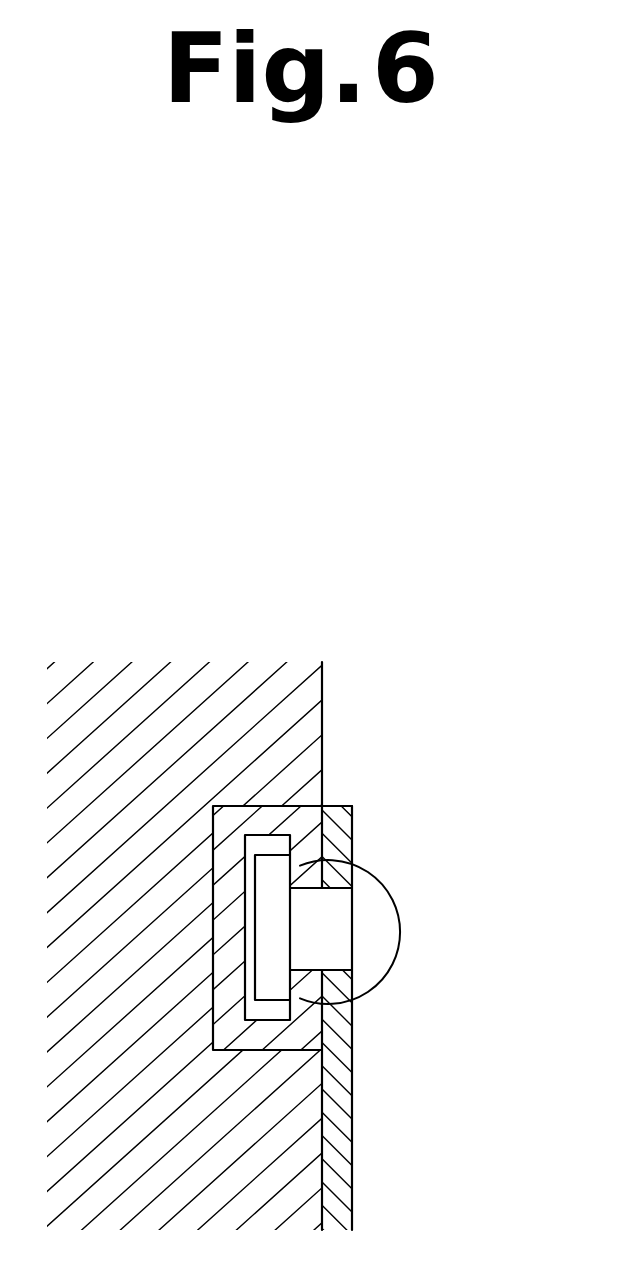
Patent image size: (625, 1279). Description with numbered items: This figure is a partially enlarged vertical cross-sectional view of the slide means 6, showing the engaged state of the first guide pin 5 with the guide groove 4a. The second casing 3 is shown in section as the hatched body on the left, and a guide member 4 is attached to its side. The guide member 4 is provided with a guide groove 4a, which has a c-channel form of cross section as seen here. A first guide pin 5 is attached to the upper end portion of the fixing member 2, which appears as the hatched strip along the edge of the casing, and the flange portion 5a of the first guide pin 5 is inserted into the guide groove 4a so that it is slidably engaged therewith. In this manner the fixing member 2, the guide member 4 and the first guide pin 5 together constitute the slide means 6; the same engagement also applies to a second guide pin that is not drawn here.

The fixing member 2 is at (333, 1075).
The second casing 3 is at (322, 712).
The guide member 4 is at (293, 815).
The guide groove 4a is at (270, 1014).
The first guide pin 5 is at (333, 929).
The flange portion 5a is at (273, 870).
The slide means 6 is at (274, 936).